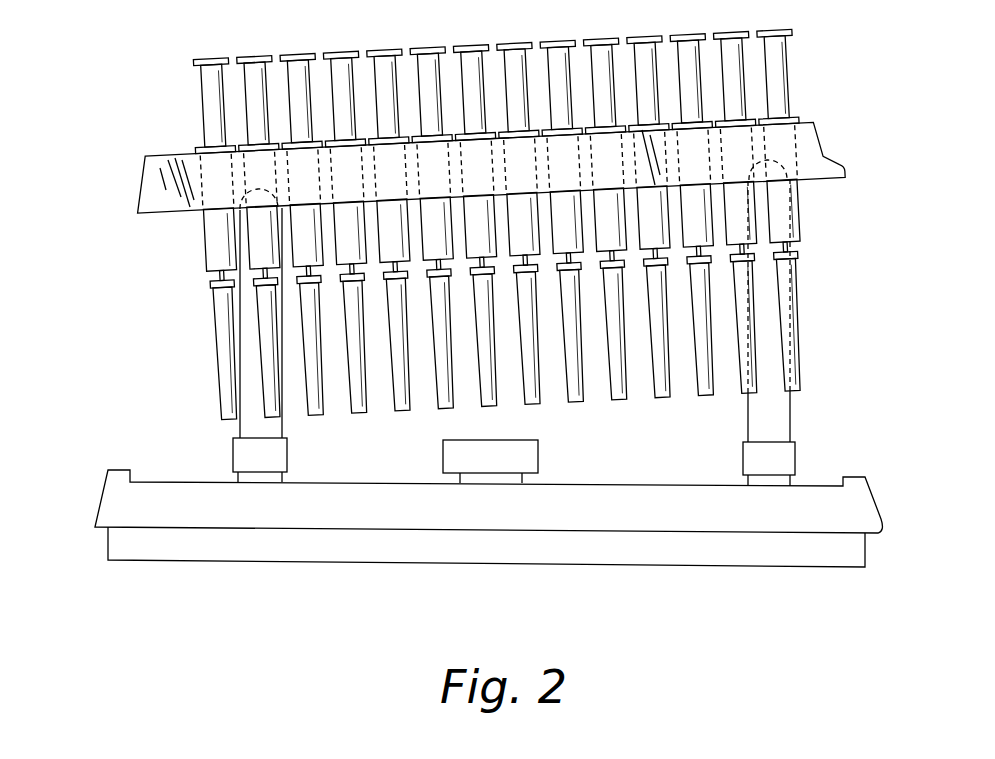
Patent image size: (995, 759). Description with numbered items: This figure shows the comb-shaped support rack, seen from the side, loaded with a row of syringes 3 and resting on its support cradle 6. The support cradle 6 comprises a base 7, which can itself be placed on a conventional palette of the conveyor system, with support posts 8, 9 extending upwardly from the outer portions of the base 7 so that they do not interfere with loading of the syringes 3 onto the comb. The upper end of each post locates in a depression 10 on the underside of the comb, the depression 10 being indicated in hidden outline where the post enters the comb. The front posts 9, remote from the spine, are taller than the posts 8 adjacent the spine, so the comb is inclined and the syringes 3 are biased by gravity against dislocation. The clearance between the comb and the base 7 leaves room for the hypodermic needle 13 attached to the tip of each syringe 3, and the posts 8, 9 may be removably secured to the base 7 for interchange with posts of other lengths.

The syringe 3 is at (797, 212).
The support cradle 6 is at (480, 494).
The base 7 is at (850, 507).
The support post 8 is at (253, 423).
The support post 9 is at (770, 412).
The depression 10 is at (784, 165).
The hypodermic needle 13 is at (622, 378).